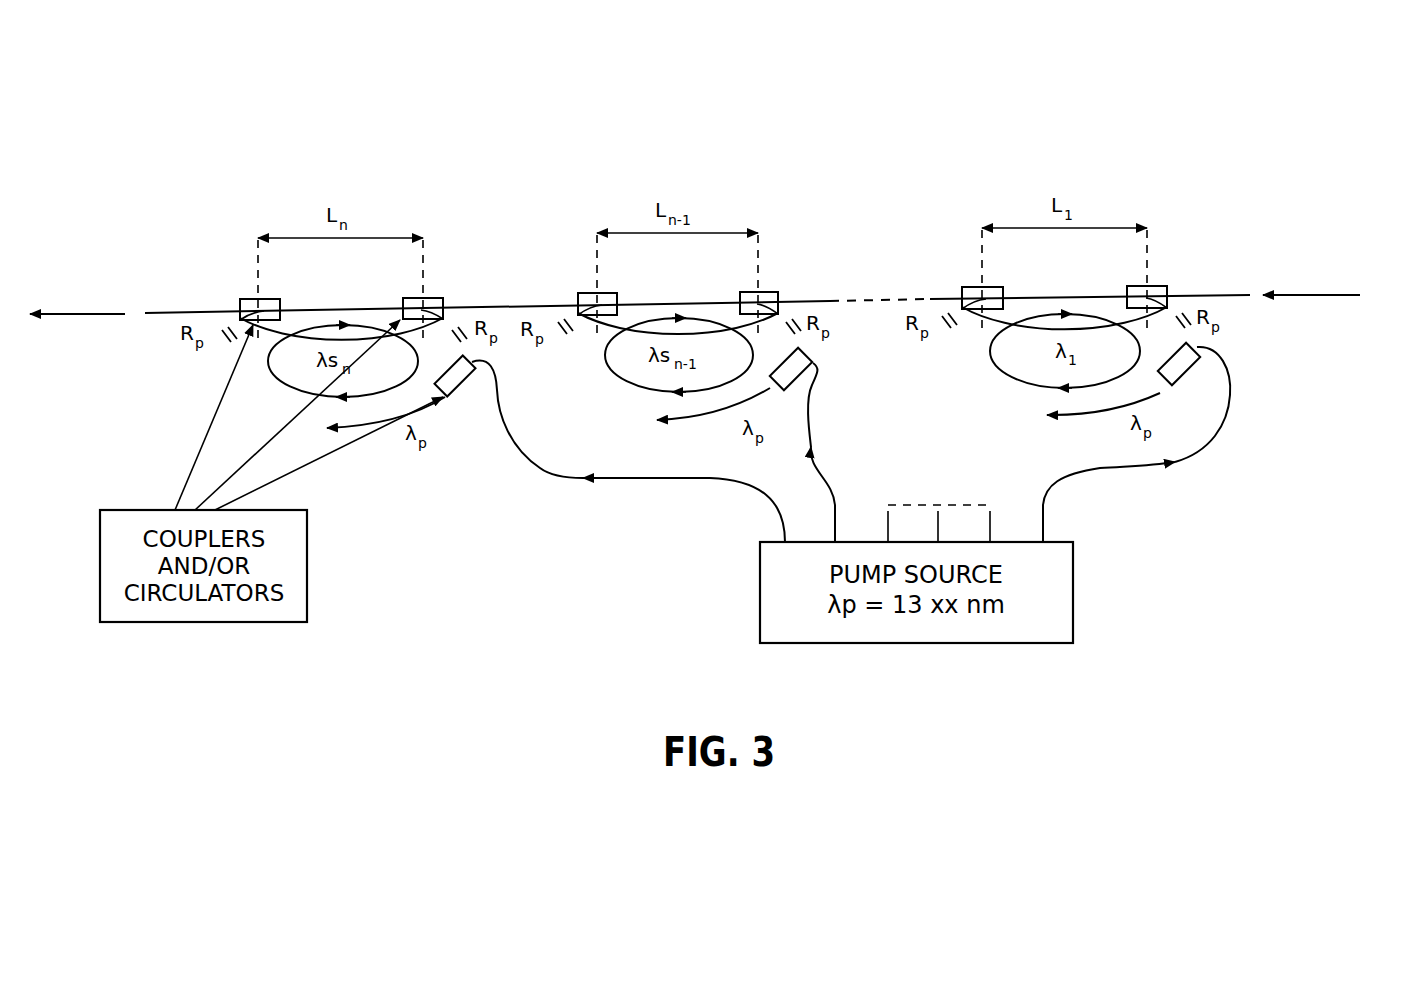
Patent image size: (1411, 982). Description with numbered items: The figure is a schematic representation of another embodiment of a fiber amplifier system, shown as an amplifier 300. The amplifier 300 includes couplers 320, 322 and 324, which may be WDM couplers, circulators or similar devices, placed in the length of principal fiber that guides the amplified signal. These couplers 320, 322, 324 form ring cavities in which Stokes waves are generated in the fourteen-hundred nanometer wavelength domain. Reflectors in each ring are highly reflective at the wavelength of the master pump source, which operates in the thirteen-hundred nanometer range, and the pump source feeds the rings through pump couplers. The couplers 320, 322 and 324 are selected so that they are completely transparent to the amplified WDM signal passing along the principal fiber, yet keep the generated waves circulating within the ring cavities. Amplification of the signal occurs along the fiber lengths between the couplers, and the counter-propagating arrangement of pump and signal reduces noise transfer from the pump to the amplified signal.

The amplifier 300 is at (262, 122).
The coupler 320 is at (242, 300).
The coupler 322 is at (580, 296).
The coupler 324 is at (962, 290).